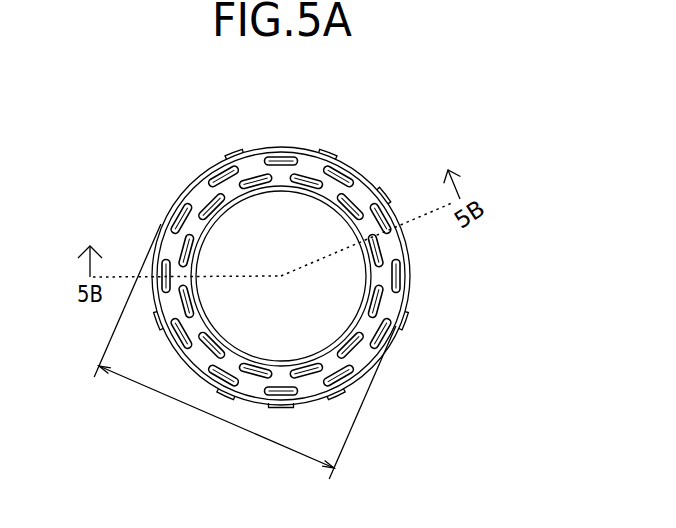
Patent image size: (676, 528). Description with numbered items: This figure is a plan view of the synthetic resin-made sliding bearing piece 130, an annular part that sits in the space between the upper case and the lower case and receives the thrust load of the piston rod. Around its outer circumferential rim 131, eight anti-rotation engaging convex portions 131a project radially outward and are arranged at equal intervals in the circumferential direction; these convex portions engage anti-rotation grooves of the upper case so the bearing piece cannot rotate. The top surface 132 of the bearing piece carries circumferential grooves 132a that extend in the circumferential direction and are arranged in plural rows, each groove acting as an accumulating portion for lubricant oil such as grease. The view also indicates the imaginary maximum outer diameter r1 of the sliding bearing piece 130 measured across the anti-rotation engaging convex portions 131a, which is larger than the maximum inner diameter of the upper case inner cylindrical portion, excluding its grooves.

The synthetic resin-made sliding bearing piece 130 is at (309, 250).
The outer circumferential rim 131 is at (253, 153).
The anti-rotation engaging convex portions 131a is at (333, 153).
The top surface 132 is at (385, 242).
The circumferential grooves 132a is at (402, 280).
The imaginary maximum outer diameter r1 is at (198, 415).